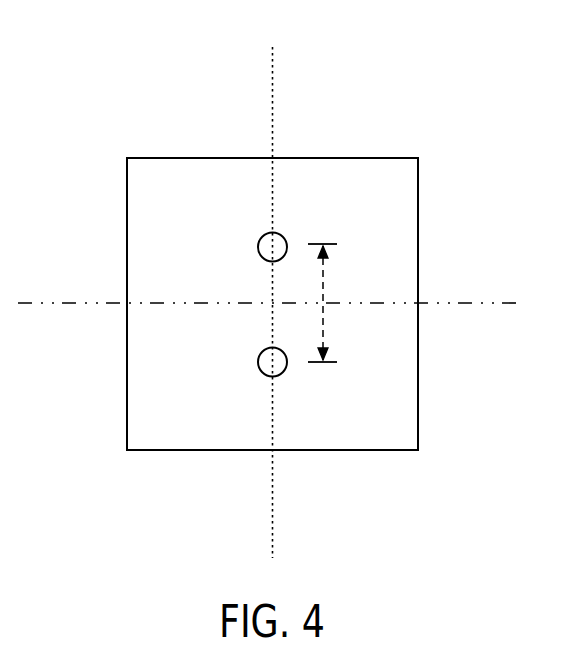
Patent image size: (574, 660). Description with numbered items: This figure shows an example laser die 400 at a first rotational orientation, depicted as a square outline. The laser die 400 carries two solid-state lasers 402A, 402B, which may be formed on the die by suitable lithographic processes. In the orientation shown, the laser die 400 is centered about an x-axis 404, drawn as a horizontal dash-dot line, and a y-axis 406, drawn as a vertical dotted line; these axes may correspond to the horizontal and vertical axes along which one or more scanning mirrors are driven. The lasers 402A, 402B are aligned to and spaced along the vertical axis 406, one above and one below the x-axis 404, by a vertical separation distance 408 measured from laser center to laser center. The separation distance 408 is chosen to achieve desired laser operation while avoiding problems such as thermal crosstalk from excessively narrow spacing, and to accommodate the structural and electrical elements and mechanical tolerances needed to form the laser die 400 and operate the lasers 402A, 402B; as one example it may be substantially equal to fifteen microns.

The laser die 400 is at (418, 158).
The solid-state laser 402A is at (258, 248).
The solid-state laser 402B is at (258, 362).
The x-axis 404 is at (472, 303).
The y-axis 406 is at (272, 100).
The vertical separation distance 408 is at (323, 275).